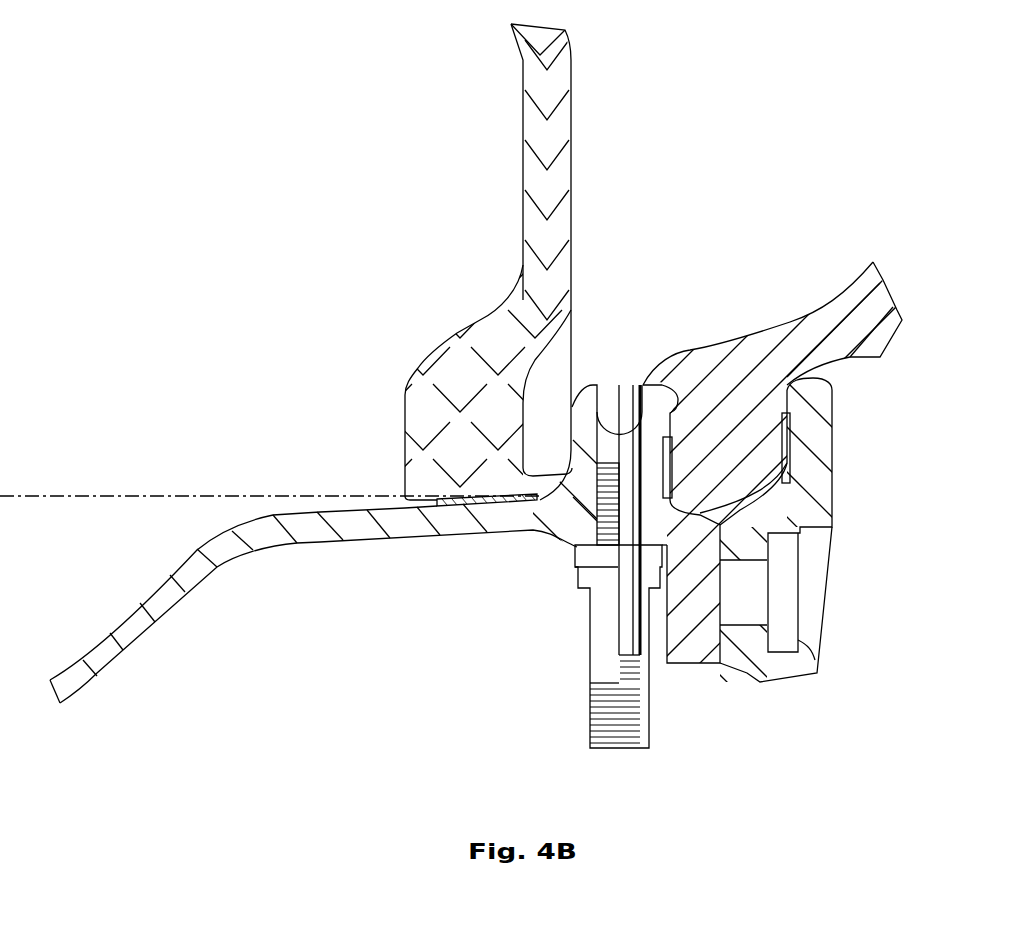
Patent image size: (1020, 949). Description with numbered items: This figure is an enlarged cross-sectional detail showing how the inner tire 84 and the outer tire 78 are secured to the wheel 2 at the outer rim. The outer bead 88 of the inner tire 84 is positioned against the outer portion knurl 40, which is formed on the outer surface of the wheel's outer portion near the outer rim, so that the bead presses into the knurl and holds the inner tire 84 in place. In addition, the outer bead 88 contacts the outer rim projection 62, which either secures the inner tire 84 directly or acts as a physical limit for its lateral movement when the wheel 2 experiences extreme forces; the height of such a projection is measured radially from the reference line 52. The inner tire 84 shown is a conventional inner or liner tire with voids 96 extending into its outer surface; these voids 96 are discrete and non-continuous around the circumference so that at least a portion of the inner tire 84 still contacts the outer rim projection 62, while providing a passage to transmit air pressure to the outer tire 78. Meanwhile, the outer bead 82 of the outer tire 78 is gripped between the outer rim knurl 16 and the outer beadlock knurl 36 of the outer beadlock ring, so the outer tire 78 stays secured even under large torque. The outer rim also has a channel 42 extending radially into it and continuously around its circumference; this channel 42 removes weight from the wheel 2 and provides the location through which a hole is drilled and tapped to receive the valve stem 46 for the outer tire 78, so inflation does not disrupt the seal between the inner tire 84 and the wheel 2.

The wheel 2 is at (205, 702).
The outer rim knurl 16 is at (667, 463).
The outer beadlock knurl 36 is at (783, 467).
The outer portion knurl 40 is at (480, 505).
The channel 42 is at (620, 403).
The valve stem 46 is at (607, 625).
The reference line 52 is at (205, 494).
The outer rim projection 62 is at (660, 402).
The outer tire 78 is at (880, 282).
The outer bead 82 is at (728, 432).
The inner tire 84 is at (525, 250).
The outer bead 88 is at (465, 430).
The voids 96 is at (555, 372).